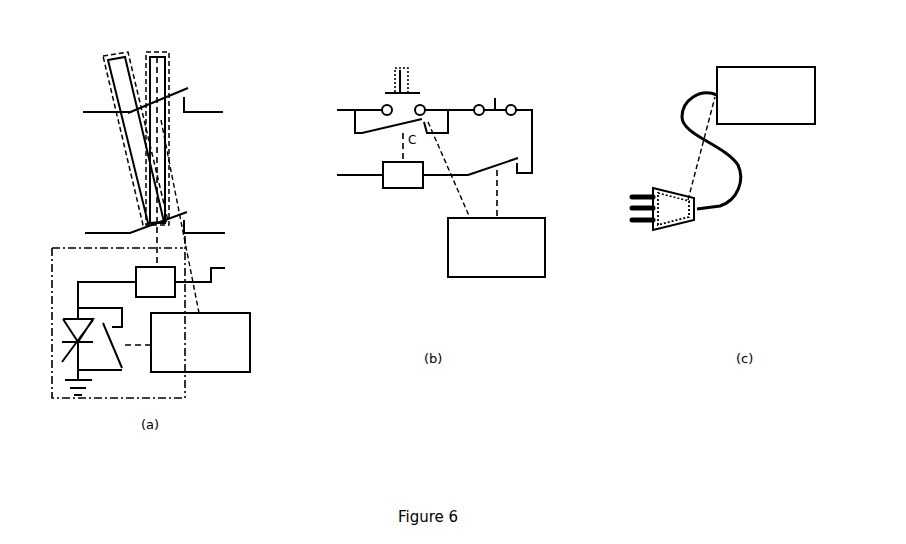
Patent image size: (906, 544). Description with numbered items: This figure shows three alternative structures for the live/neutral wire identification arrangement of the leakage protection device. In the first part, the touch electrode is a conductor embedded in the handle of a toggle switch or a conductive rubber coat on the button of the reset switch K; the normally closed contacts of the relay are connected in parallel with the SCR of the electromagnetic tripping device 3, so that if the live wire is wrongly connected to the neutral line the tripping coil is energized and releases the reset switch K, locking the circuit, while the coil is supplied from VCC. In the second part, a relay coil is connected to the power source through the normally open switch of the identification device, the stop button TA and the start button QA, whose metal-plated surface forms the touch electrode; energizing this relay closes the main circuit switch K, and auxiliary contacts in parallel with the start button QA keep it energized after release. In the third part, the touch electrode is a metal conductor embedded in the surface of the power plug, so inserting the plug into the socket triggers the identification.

The electromagnetic tripping device 3 is at (175, 383).
The main circuit switch K is at (175, 96).
The start button QA is at (390, 80).
The stop button TA is at (490, 126).
The supply voltage VCC is at (200, 268).